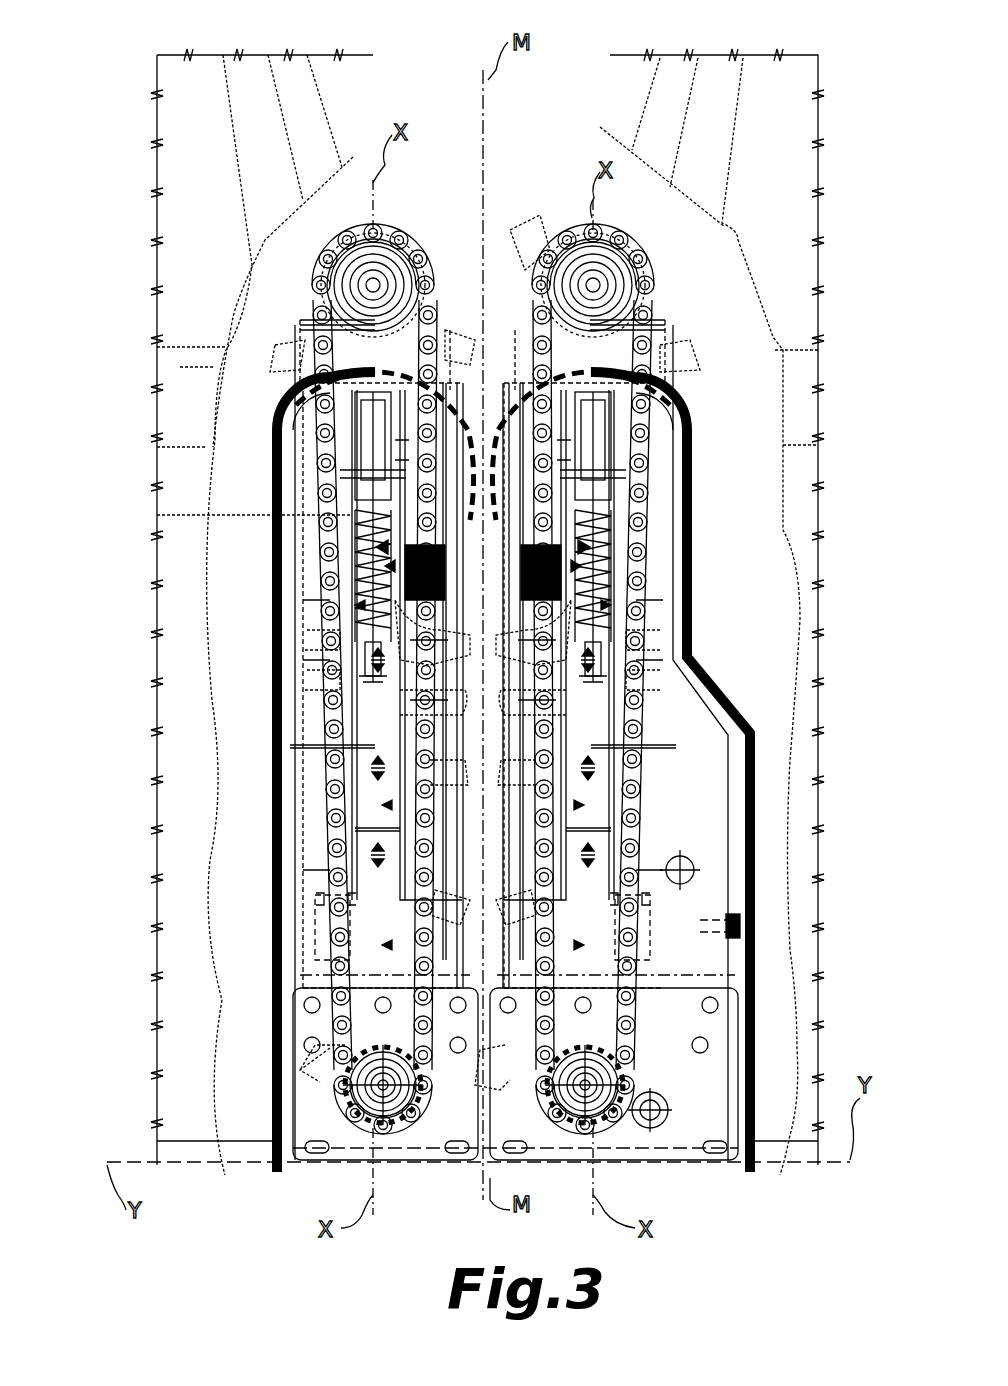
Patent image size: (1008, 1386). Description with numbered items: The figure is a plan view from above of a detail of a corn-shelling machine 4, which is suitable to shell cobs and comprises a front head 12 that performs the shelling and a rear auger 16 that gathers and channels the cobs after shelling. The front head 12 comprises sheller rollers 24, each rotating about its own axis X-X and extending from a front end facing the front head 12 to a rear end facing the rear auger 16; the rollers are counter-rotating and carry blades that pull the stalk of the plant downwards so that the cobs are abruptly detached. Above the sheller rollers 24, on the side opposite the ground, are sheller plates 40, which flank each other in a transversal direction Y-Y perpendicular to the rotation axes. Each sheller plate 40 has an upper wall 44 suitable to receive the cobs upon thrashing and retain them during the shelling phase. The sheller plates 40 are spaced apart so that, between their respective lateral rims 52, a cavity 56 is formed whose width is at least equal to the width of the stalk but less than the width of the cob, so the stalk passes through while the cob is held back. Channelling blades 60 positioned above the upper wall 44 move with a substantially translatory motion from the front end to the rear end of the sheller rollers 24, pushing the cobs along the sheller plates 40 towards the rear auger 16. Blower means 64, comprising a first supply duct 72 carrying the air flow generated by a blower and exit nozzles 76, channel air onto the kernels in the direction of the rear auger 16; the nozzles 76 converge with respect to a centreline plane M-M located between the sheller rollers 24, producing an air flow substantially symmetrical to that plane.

The corn-shelling machine 4 is at (240, 40).
The front head 12 is at (725, 310).
The rear auger 16 is at (235, 1088).
The sheller roller 24 is at (335, 690).
The sheller plate 40 is at (462, 1000).
The upper wall 44 is at (455, 858).
The lateral rim 52 is at (400, 775).
The cavity 56 is at (355, 560).
The channelling blade 60 is at (448, 332).
The blower means 64 is at (489, 741).
The first supply duct 72 is at (270, 610).
The exit nozzle 76 is at (320, 445).